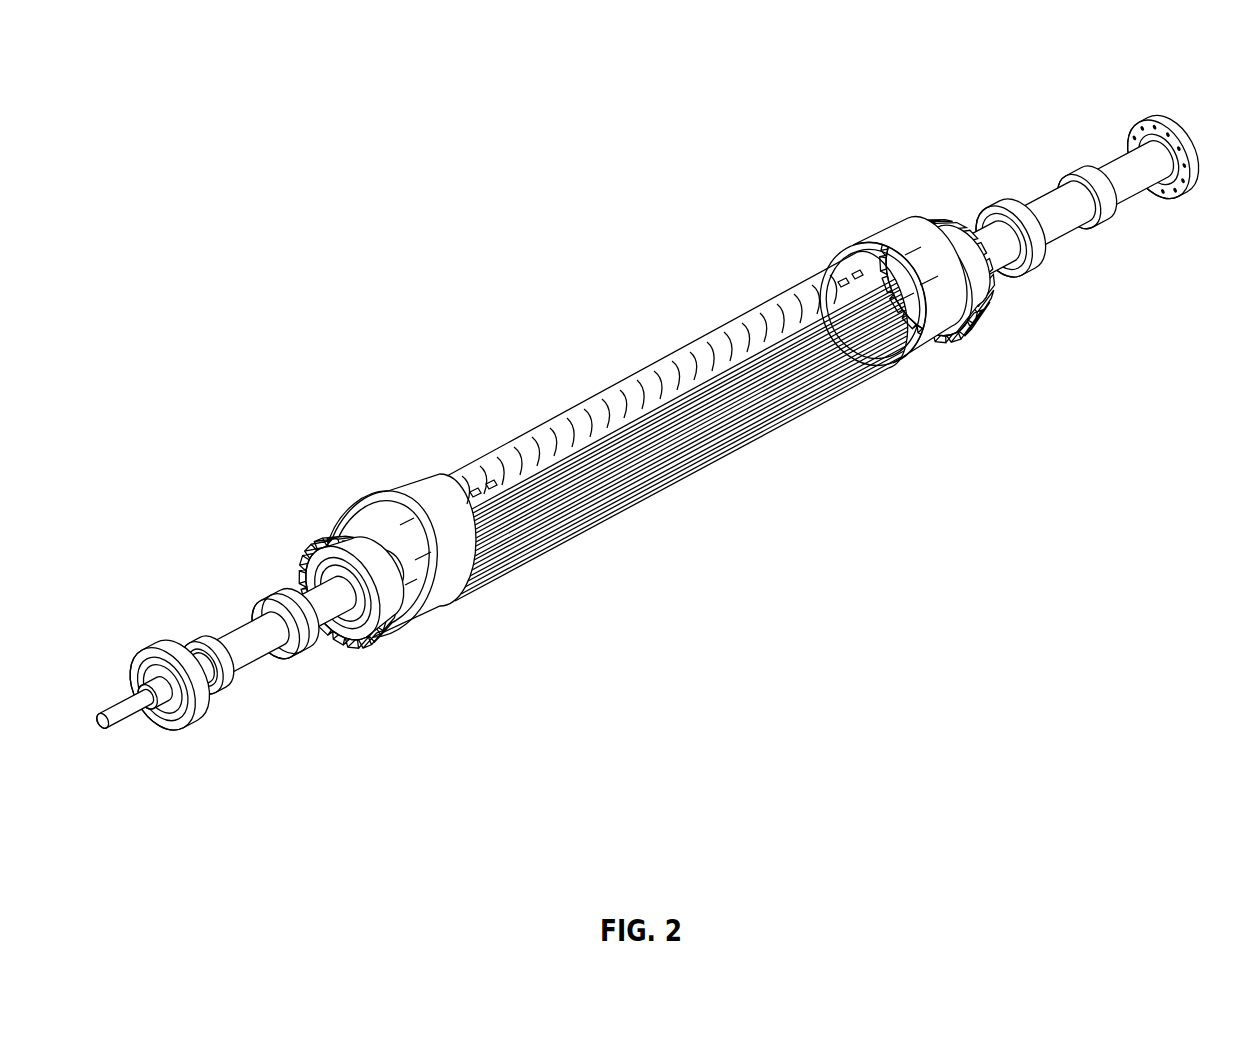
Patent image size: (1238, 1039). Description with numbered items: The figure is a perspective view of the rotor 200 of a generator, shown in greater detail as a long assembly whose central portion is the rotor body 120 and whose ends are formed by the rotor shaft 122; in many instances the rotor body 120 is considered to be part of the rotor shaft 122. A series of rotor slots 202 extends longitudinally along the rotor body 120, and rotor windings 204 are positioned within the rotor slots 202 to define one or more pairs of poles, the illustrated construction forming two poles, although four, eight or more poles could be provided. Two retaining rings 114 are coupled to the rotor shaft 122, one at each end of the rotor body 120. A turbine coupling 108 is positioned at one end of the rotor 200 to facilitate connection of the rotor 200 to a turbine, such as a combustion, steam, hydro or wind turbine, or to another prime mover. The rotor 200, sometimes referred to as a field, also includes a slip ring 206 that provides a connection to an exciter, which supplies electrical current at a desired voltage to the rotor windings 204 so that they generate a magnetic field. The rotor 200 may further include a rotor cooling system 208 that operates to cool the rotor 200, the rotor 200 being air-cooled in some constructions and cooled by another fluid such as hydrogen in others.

The rotor 200 is at (953, 86).
The turbine coupling 108 is at (1163, 157).
The retaining rings 114 is at (637, 433).
The rotor body 120 is at (668, 426).
The rotor shaft 122 is at (1011, 237).
The rotor slots 202 is at (649, 389).
The rotor windings 204 is at (684, 436).
The slip ring 206 is at (318, 606).
The rotor cooling system 208 is at (353, 588).